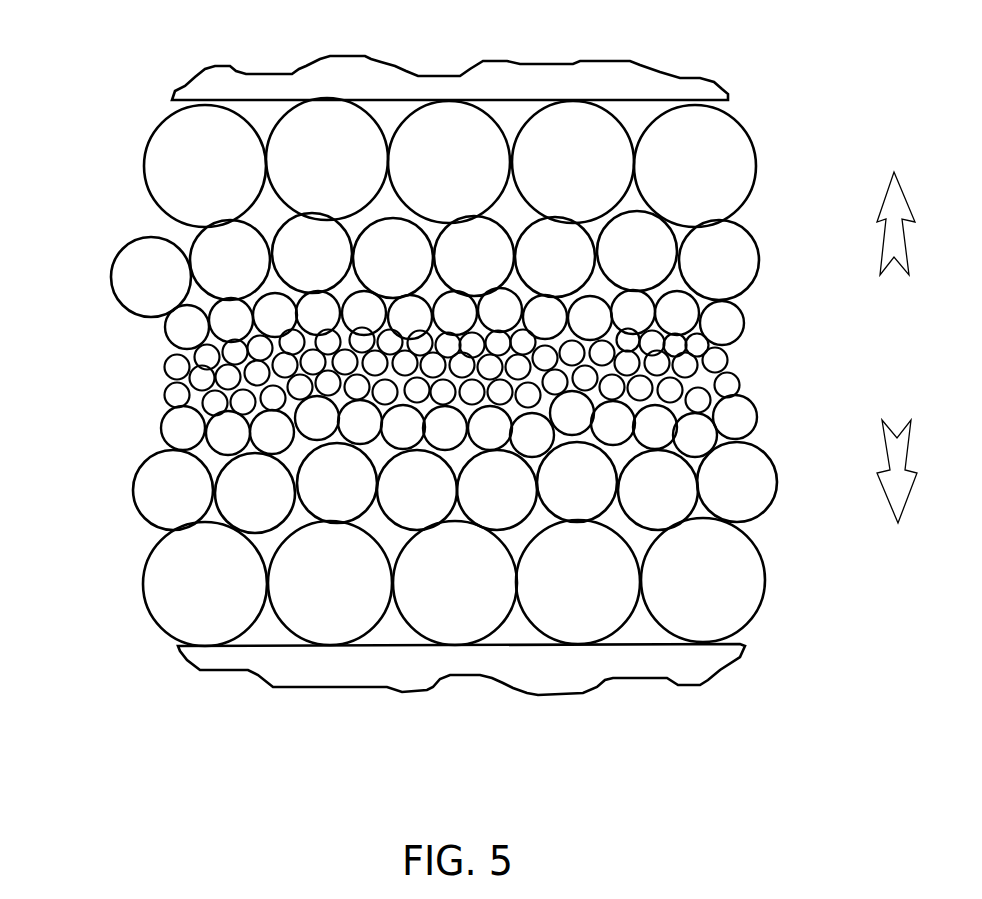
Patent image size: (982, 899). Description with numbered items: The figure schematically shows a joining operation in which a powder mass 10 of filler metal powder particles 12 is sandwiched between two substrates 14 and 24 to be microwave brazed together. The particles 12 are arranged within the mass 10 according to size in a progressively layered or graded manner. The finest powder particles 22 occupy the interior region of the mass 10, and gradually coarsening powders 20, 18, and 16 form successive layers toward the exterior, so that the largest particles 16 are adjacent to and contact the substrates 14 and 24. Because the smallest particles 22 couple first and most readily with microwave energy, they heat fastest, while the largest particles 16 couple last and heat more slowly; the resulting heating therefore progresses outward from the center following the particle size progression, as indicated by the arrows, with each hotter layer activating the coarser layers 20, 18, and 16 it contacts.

The powder mass 10 is at (748, 115).
The powder particles 12 is at (105, 649).
The substrate 14 is at (215, 659).
The largest particles 16 is at (794, 102).
The coarsening powder layer 18 is at (794, 218).
The coarsening powder layer 20 is at (794, 295).
The finest powder particles 22 is at (794, 342).
The substrate 24 is at (683, 87).